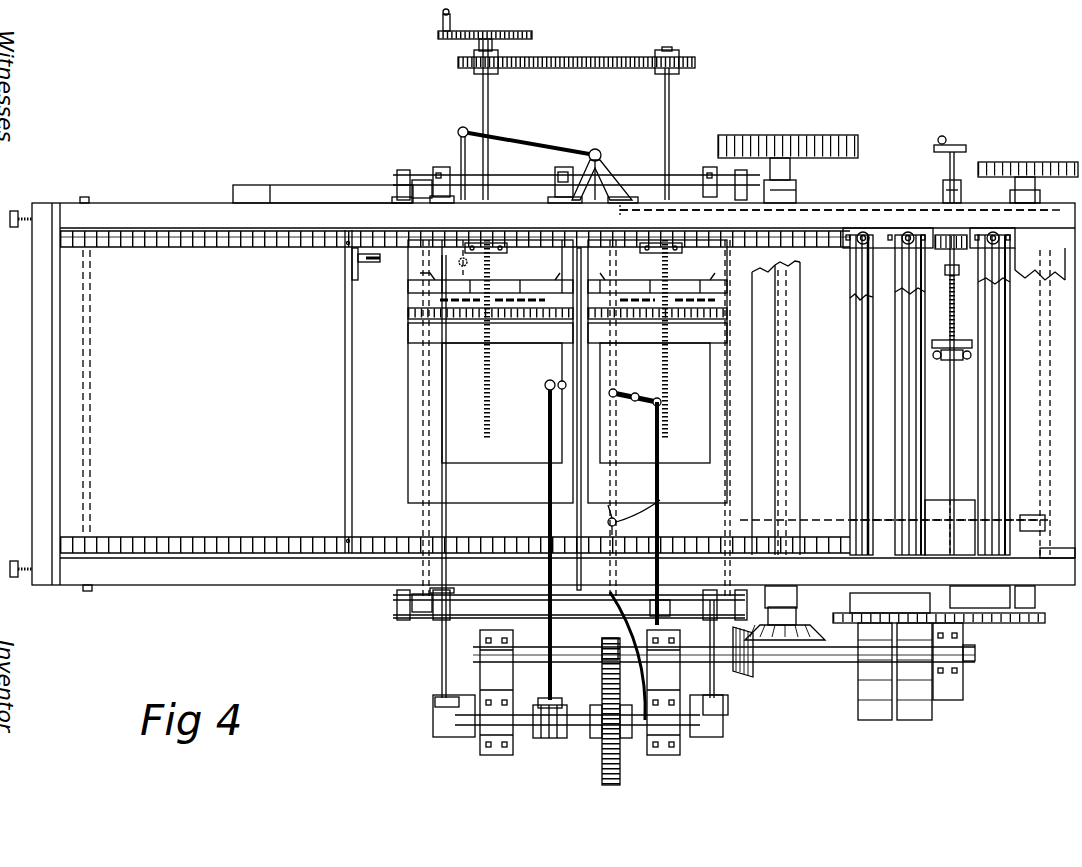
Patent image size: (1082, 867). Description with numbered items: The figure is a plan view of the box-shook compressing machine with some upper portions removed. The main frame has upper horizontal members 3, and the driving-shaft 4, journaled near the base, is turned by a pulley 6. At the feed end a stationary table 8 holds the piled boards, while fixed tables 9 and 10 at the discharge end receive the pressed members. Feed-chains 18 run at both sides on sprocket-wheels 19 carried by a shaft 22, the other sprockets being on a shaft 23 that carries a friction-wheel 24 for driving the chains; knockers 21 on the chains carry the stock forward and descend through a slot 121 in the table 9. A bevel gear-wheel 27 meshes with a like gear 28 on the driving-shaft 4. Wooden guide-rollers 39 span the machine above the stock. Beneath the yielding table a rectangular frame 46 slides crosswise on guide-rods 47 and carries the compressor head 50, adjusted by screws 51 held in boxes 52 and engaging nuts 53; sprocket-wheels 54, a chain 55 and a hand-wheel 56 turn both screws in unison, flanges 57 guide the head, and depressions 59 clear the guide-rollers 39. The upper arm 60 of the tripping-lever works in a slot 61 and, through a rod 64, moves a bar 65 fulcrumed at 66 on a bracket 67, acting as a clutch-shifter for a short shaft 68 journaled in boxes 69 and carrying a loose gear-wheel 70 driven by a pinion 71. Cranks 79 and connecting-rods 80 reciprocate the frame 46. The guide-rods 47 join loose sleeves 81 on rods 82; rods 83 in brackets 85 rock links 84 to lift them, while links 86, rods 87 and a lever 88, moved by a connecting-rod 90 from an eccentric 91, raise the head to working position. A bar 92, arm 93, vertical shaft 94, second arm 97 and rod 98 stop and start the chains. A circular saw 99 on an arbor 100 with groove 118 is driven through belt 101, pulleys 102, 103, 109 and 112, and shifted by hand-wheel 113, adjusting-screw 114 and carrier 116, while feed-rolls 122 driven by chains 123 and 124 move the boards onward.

The upper horizontal frame member 3 is at (200, 203).
The driving-shaft 4 is at (838, 664).
The pulley 6 is at (905, 722).
The stationary table 8 is at (130, 392).
The fixed table 9 is at (800, 270).
The fixed table 10 is at (1057, 282).
The feed-chains 18 is at (140, 230).
The sprocket-wheels 19 is at (66, 203).
The knockers 21 is at (345, 410).
The shaft 22 is at (85, 197).
The shaft 23 is at (790, 165).
The friction-wheel 24 is at (840, 135).
The bevel gear-wheel 27 is at (815, 642).
The bevel gear 28 is at (742, 678).
The guide-rollers 39 is at (885, 235).
The rectangular frame 46 is at (408, 446).
The guide-rods 47 is at (408, 520).
The compressor bar or head 50 is at (408, 318).
The screws 51 is at (490, 90).
The boxes 52 is at (500, 268).
The nuts 53 is at (420, 313).
The sprocket-wheels 54 is at (474, 58).
The chain 55 is at (606, 57).
The hand-wheel 56 is at (532, 34).
The flanges 57 is at (408, 333).
The depressions 59 is at (440, 300).
The upper arm of tripping-lever 60 is at (352, 268).
The slot 61 is at (358, 258).
The rod 64 is at (420, 275).
The bar 65 is at (630, 628).
The fulcrum 66 is at (647, 500).
The bracket or fixed support 67 is at (615, 515).
The short shaft 68 is at (515, 740).
The boxes 69 is at (482, 738).
The loose gear-wheel 70 is at (608, 786).
The pinion 71 is at (600, 675).
The cranks 79 is at (433, 718).
The connecting-rods 80 is at (440, 650).
The loose sleeves 81 is at (420, 180).
The rods 82 is at (690, 175).
The rods 83 is at (432, 196).
The links 84 is at (440, 167).
The brackets 85 is at (397, 176).
The link 86 is at (564, 167).
The rod 87 is at (560, 362).
The lever 88 is at (655, 392).
The connecting-rod 90 is at (545, 462).
The eccentric 91 is at (548, 742).
The bar 92 is at (460, 140).
The arm 93 is at (505, 140).
The vertical shaft 94 is at (594, 148).
The second arm 97 is at (606, 170).
The rod 98 is at (648, 208).
The circular saw 99 is at (972, 342).
The arbor 100 is at (960, 440).
The belt 101 is at (1030, 532).
The pulley 102 is at (1025, 500).
The pulley 103 is at (1030, 515).
The pulley 109 is at (1045, 162).
The pulley 112 is at (940, 235).
The hand-wheel 113 is at (952, 145).
The adjusting-screw 114 is at (962, 185).
The carrier 116 is at (971, 356).
The longitudinal groove 118 is at (965, 470).
The slot 121 is at (812, 268).
The feed-rolls 122 is at (1000, 400).
The chain 123 is at (1032, 623).
The chain 124 is at (930, 610).